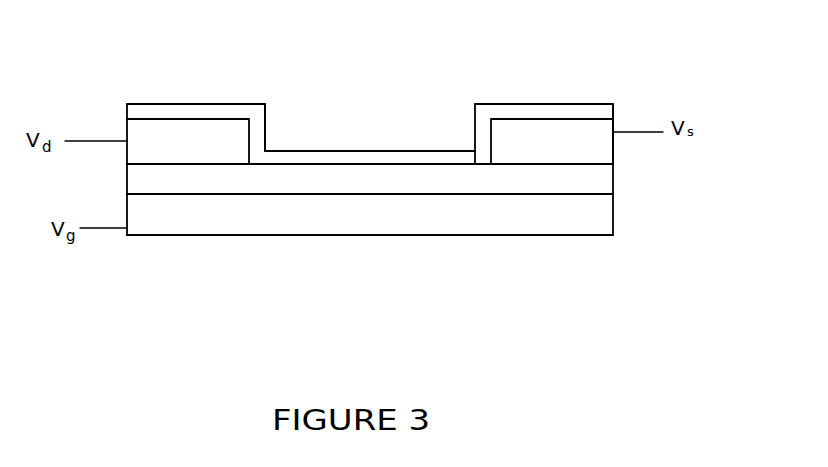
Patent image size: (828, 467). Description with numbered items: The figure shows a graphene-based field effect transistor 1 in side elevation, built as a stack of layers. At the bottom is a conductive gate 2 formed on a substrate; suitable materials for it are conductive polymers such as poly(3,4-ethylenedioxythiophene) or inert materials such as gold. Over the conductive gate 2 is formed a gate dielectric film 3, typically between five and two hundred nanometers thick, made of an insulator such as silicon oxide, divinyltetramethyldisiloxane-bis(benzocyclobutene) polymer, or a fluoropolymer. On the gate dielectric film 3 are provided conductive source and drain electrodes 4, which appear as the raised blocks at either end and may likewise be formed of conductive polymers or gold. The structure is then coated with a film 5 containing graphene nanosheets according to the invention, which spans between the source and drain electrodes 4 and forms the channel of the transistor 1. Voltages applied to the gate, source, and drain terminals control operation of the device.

The graphene-based field effect transistor 1 is at (582, 79).
The conductive gate 2 is at (585, 217).
The gate dielectric film 3 is at (135, 176).
The conductive source and drain electrodes 4 is at (598, 144).
The film containing graphene nanosheets 5 is at (177, 111).